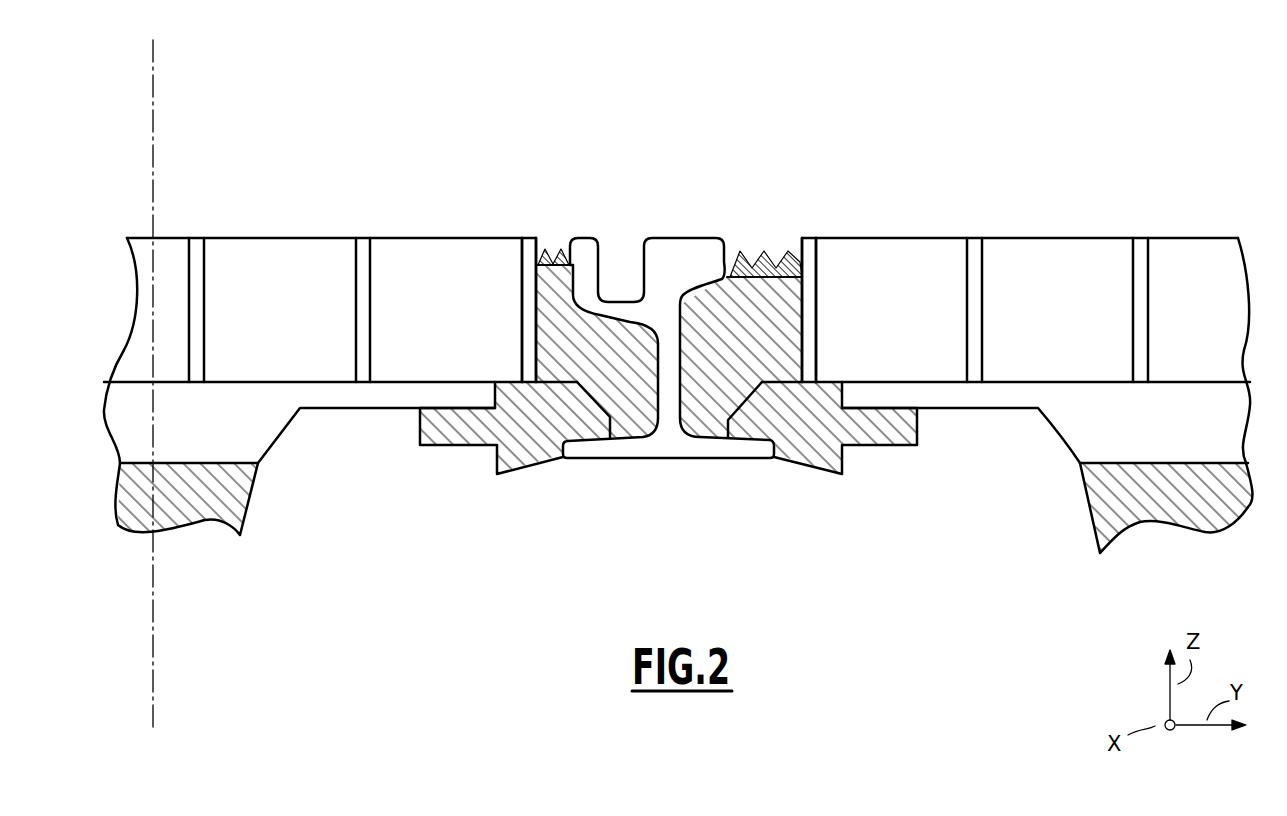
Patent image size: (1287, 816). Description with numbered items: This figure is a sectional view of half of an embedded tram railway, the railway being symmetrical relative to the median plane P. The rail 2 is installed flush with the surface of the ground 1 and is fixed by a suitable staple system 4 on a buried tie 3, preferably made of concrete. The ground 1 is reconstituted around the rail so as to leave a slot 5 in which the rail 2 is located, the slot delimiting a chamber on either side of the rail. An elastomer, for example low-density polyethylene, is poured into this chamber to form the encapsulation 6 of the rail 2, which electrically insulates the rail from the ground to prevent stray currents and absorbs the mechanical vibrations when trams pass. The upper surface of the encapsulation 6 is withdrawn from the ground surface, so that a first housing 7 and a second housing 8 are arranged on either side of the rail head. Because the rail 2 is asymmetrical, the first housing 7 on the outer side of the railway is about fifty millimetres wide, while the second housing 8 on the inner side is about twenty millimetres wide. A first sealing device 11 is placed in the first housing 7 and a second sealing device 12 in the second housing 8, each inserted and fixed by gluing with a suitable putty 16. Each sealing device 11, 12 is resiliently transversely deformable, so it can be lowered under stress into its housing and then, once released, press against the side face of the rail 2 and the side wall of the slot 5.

The ground 1 is at (320, 208).
The rail 2 is at (688, 237).
The buried tie 3 is at (647, 408).
The staple system 4 is at (498, 436).
The slot 5 is at (803, 330).
The encapsulation 6 is at (752, 360).
The first housing 7 is at (803, 258).
The second housing 8 is at (536, 257).
The first sealing device 11 is at (750, 256).
The second sealing device 12 is at (545, 262).
The putty 16 is at (550, 258).
The median plane P is at (153, 110).